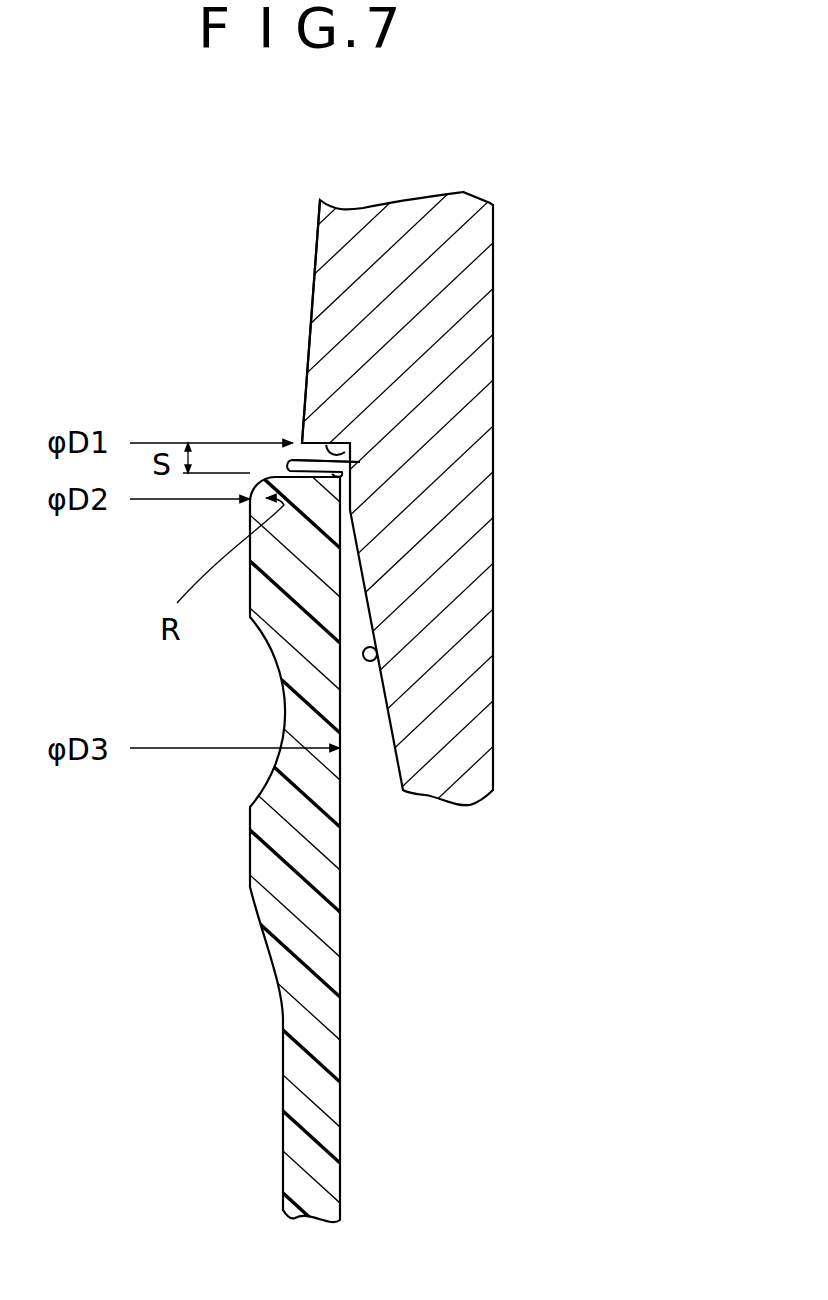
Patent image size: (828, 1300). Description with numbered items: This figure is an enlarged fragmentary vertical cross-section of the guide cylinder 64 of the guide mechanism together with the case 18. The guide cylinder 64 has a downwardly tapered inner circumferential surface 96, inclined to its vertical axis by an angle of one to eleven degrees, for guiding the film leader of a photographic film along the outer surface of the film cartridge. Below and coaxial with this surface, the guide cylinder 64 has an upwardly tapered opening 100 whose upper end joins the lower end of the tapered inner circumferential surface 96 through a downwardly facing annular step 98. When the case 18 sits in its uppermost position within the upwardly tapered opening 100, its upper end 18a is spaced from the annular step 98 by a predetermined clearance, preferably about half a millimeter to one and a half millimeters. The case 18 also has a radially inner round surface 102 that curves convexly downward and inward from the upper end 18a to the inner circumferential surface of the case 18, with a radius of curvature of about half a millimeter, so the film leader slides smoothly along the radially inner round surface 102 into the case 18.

The guide cylinder 64 is at (503, 242).
The case 18 is at (348, 1003).
The downwardly tapered inner circumferential surface 96 is at (316, 247).
The annular step 98 is at (340, 446).
The upper end of the case 18a is at (335, 470).
The radially inner round surface 102 is at (350, 460).
The upwardly tapered opening 100 is at (378, 660).